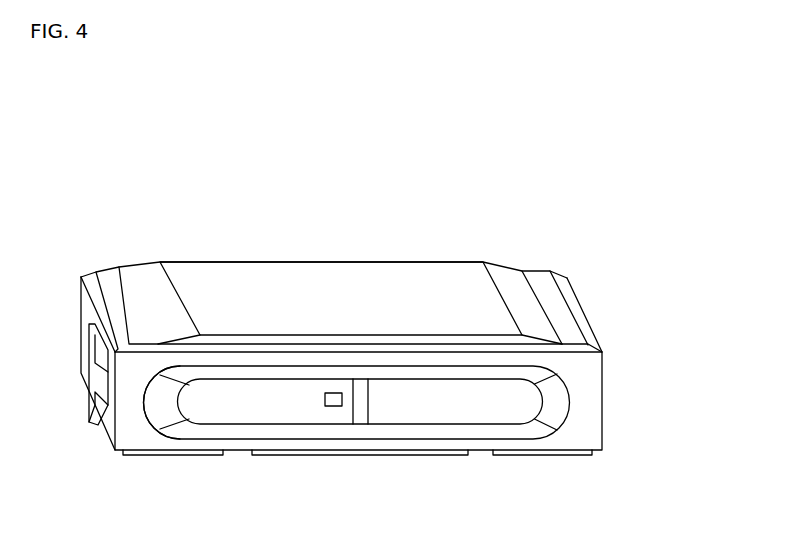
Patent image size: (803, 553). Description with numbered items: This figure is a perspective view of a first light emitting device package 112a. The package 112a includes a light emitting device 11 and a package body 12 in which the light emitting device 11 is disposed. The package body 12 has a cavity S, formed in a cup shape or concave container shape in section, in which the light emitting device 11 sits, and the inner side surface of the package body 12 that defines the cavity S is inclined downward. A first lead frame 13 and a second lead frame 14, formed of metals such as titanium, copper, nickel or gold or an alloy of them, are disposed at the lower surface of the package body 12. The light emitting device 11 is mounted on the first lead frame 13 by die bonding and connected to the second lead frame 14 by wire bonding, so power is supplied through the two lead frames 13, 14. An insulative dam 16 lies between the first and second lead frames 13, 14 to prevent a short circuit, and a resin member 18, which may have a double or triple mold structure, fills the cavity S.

The first light emitting device package 112a is at (627, 151).
The package body 12 is at (388, 279).
The first lead frame 13 is at (223, 390).
The resin member 18 is at (435, 408).
The cavity S is at (194, 412).
The light emitting device 11 is at (333, 403).
The insulative dam 16 is at (367, 415).
The second lead frame 14 is at (525, 407).